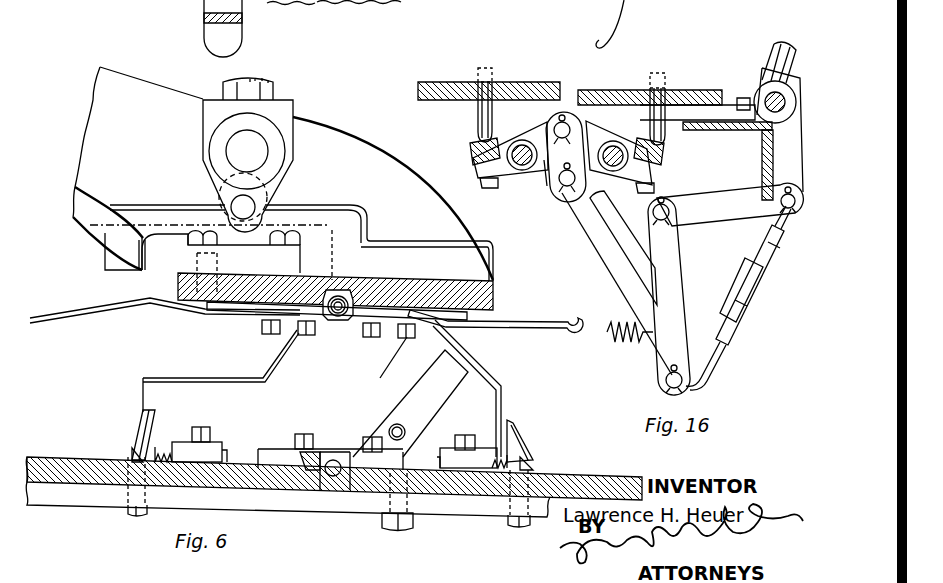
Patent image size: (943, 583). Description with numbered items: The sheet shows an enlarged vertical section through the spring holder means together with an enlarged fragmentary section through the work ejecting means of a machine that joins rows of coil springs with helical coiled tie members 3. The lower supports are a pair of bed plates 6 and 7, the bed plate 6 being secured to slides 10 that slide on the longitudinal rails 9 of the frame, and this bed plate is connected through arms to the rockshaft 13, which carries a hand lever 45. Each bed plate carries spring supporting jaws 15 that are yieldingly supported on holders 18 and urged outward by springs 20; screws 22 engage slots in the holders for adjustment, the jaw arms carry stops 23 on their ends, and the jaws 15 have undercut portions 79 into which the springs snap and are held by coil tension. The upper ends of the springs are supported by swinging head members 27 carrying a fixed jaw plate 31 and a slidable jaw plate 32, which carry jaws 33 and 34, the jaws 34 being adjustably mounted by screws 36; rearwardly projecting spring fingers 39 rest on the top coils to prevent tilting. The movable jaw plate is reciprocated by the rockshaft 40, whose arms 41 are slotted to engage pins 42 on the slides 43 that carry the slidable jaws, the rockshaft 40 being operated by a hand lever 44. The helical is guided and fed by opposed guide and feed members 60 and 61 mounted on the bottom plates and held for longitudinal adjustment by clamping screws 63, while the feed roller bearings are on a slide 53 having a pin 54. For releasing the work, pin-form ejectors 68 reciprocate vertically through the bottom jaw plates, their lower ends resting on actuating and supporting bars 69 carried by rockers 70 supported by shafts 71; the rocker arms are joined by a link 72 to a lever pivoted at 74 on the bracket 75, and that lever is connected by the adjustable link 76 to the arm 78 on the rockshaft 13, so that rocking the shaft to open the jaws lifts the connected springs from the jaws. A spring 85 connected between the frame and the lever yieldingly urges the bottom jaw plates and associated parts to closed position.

In FIG. 6, the helical coiled tie member 3 is at (333, 317).
In FIG. 6, the bed plate 6 is at (595, 483).
In FIG. 16, the bed plate 6 is at (698, 90).
In FIG. 6, the bed plate 7 is at (73, 460).
In FIG. 16, the bed plate 7 is at (535, 88).
In FIG. 16, the longitudinal rail 9 is at (712, 127).
In FIG. 6, the slide 10 is at (87, 497).
In FIG. 16, the rockshaft 13 is at (770, 95).
In FIG. 6, the jaw 15 is at (140, 447).
In FIG. 6, the holder 18 is at (183, 447).
In FIG. 6, the spring 20 is at (165, 447).
In FIG. 6, the screw 22 is at (200, 433).
In FIG. 6, the stop 23 is at (230, 448).
In FIG. 6, the head member 27 is at (128, 83).
In FIG. 6, the jaw plate 31 is at (480, 298).
In FIG. 6, the jaw plate 32 is at (240, 303).
In FIG. 6, the jaw 33 is at (257, 308).
In FIG. 6, the jaw 34 is at (435, 322).
In FIG. 6, the screw 36 is at (410, 337).
In FIG. 6, the spring finger 39 is at (115, 308).
In FIG. 6, the rockshaft 40 is at (257, 148).
In FIG. 6, the arm 41 is at (270, 178).
In FIG. 6, the pin 42 is at (243, 212).
In FIG. 6, the slide 43 is at (117, 253).
In FIG. 6, the hand lever 44 is at (272, 88).
In FIG. 16, the hand lever 45 is at (785, 48).
In FIG. 6, the slide 53 is at (455, 372).
In FIG. 6, the pin 54 is at (399, 425).
In FIG. 6, the guide and feed member 60 is at (332, 290).
In FIG. 6, the guide and feed member 61 is at (347, 297).
In FIG. 6, the clamping screw 63 is at (307, 328).
In FIG. 6, the ejector 68 is at (135, 517).
In FIG. 16, the ejector 68 is at (482, 110).
In FIG. 16, the actuating and supporting bar 69 is at (472, 152).
In FIG. 16, the rocker 70 is at (585, 143).
In FIG. 16, the shaft 71 is at (520, 167).
In FIG. 16, the link 72 is at (560, 193).
In FIG. 16, the pivot 74 is at (672, 224).
In FIG. 16, the bracket 75 is at (730, 208).
In FIG. 16, the adjustable link 76 is at (747, 307).
In FIG. 16, the arm 78 is at (798, 220).
In FIG. 6, the undercut portion 79 is at (133, 457).
In FIG. 16, the spring 85 is at (620, 345).